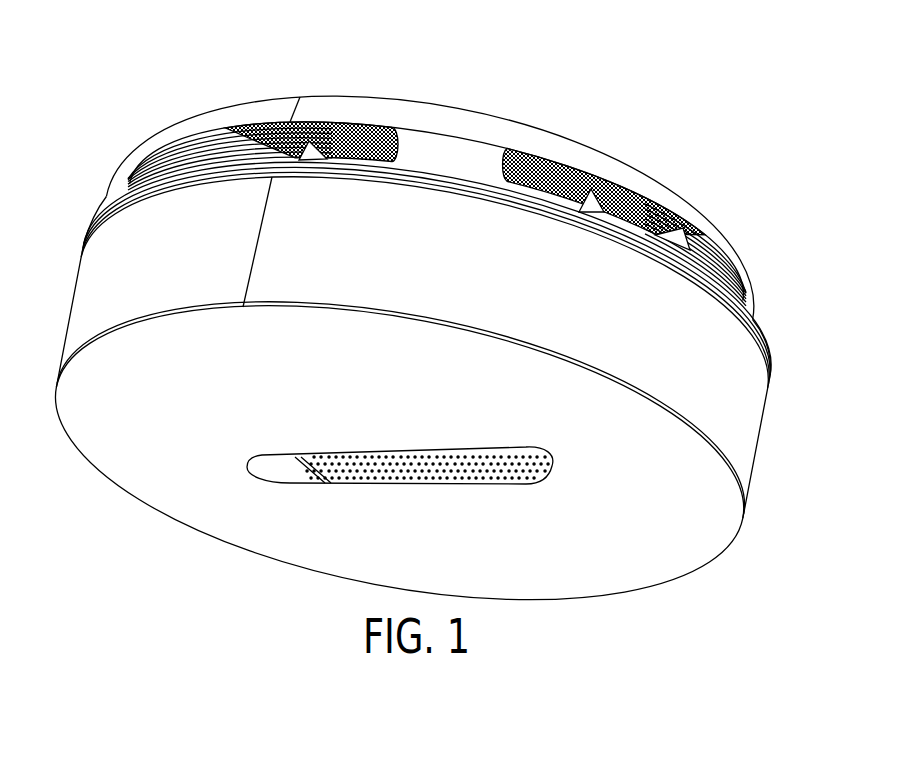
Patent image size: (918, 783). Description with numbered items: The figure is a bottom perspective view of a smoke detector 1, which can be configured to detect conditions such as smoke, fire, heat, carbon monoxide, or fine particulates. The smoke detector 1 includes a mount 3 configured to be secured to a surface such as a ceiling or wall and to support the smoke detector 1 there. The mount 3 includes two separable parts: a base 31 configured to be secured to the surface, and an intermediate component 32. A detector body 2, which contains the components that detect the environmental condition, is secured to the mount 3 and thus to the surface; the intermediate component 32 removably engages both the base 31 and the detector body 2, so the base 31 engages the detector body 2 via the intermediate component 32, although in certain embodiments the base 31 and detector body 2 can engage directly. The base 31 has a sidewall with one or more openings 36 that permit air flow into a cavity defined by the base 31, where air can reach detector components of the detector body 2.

The smoke detector 1 is at (86, 88).
The detector body 2 is at (690, 512).
The mount 3 is at (522, 90).
The base 31 is at (730, 243).
The intermediate component 32 is at (613, 190).
The openings 36 is at (128, 180).